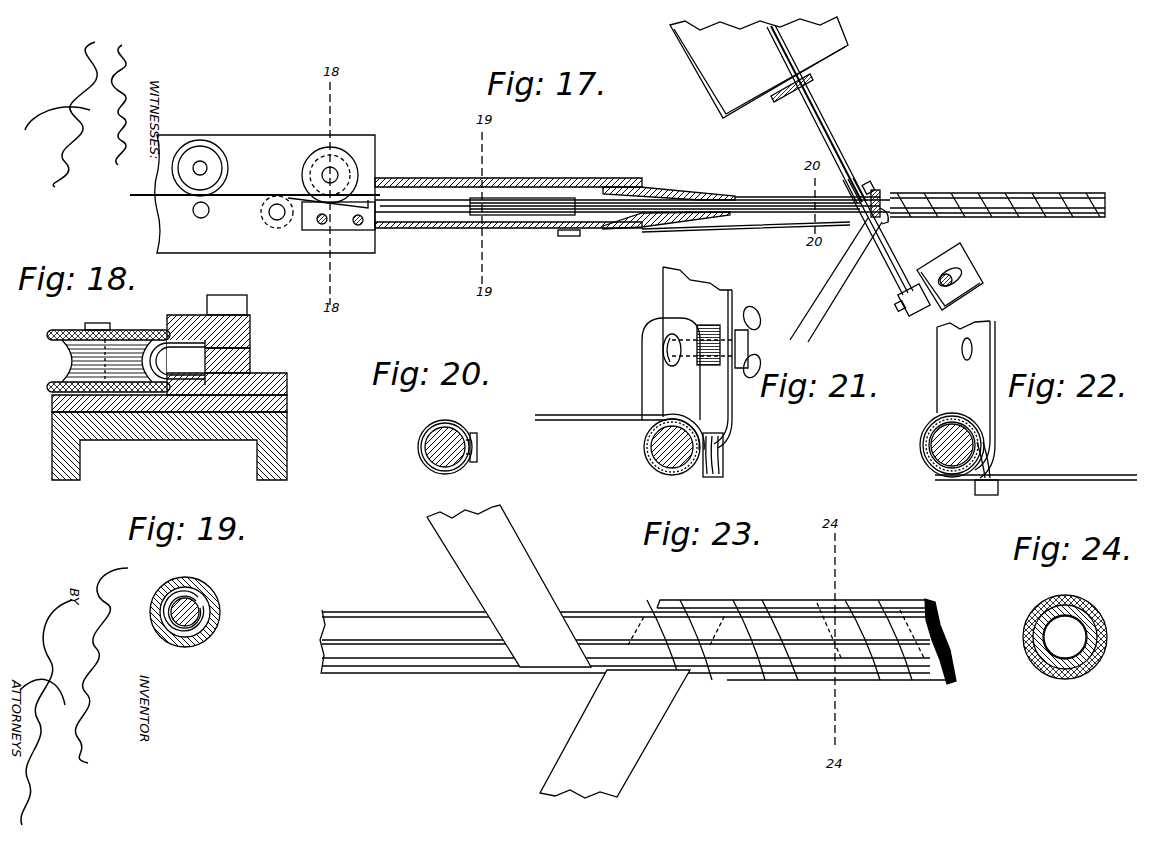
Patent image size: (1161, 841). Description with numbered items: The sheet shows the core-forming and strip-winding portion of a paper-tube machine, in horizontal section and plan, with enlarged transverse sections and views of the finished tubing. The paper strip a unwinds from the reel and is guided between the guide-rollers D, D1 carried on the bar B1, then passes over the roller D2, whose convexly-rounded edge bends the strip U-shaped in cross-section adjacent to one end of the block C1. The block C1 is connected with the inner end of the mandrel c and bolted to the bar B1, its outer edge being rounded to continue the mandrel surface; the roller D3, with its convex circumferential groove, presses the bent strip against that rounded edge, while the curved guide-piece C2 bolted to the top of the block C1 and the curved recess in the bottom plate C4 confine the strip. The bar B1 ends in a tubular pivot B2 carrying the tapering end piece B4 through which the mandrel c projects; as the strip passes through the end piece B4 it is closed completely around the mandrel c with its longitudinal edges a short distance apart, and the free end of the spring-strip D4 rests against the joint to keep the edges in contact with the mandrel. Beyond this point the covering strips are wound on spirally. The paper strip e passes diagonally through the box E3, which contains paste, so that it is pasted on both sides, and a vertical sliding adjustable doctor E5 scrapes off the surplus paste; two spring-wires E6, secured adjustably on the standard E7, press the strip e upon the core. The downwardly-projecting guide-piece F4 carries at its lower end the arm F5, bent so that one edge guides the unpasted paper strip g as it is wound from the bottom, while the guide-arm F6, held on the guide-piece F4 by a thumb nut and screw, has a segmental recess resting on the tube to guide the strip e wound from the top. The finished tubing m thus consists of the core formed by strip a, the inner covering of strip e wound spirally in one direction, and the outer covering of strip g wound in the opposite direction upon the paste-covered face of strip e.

In FIG. 17, the guide-roller D is at (207, 162).
In FIG. 17, the guide-roller D1 is at (198, 218).
In FIG. 17, the roller D2 is at (274, 222).
In FIG. 17, the roller D3 is at (340, 155).
In FIG. 18, the roller D3 is at (107, 357).
In FIG. 17, the spring-strip D4 is at (740, 229).
In FIG. 20, the spring-strip D4 is at (478, 447).
In FIG. 17, the bar B1 is at (265, 194).
In FIG. 18, the bar B1 is at (169, 437).
In FIG. 17, the tubular pivot B2 is at (508, 192).
In FIG. 19, the tubular pivot B2 is at (201, 592).
In FIG. 17, the tapering end piece B4 is at (741, 197).
In FIG. 17, the block C1 is at (341, 225).
In FIG. 18, the block C1 is at (250, 352).
In FIG. 18, the curved guide-piece C2 is at (240, 328).
In FIG. 18, the bottom plate C4 is at (287, 389).
In FIG. 17, the paper strip a is at (505, 205).
In FIG. 19, the paper strip a is at (197, 604).
In FIG. 20, the paper strip a is at (445, 470).
In FIG. 21, the paper strip a is at (665, 470).
In FIG. 22, the paper strip a is at (928, 457).
In FIG. 23, the paper strip a is at (625, 642).
In FIG. 24, the paper strip a is at (1065, 637).
In FIG. 17, the mandrel c is at (428, 202).
In FIG. 19, the mandrel c is at (207, 612).
In FIG. 20, the mandrel c is at (418, 450).
In FIG. 21, the mandrel c is at (650, 460).
In FIG. 22, the mandrel c is at (928, 473).
In FIG. 17, the paper strip e is at (838, 135).
In FIG. 21, the paper strip e is at (619, 420).
In FIG. 22, the paper strip e is at (921, 437).
In FIG. 23, the paper strip e is at (509, 586).
In FIG. 24, the paper strip e is at (1100, 628).
In FIG. 17, the paper strip g is at (818, 299).
In FIG. 22, the paper strip g is at (927, 418).
In FIG. 23, the paper strip g is at (615, 734).
In FIG. 24, the paper strip g is at (1105, 645).
In FIG. 17, the wrapped rod m is at (997, 194).
In FIG. 23, the wrapped rod m is at (792, 632).
In FIG. 17, the box E3 is at (759, 67).
In FIG. 17, the doctor E5 is at (815, 80).
In FIG. 17, the spring-wires E6 is at (893, 256).
In FIG. 17, the standard E7 is at (968, 270).
In FIG. 17, the guide-piece F4 is at (882, 186).
In FIG. 21, the guide-piece F4 is at (687, 357).
In FIG. 22, the guide-piece F4 is at (966, 399).
In FIG. 17, the arm F5 is at (888, 219).
In FIG. 21, the arm F5 is at (723, 460).
In FIG. 22, the arm F5 is at (1000, 460).
In FIG. 17, the guide-arm F6 is at (867, 182).
In FIG. 21, the guide-arm F6 is at (718, 348).